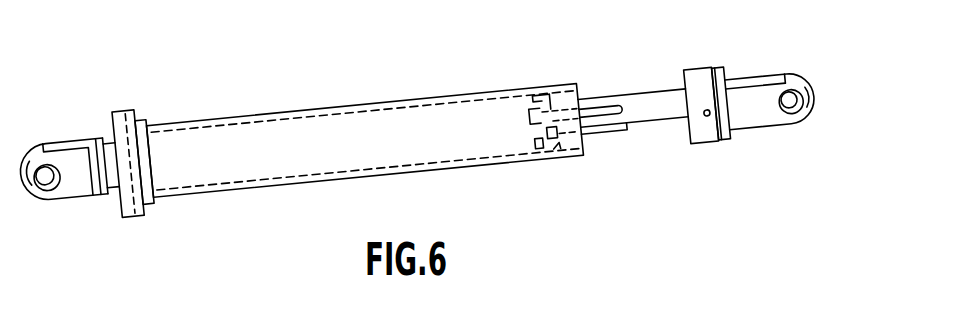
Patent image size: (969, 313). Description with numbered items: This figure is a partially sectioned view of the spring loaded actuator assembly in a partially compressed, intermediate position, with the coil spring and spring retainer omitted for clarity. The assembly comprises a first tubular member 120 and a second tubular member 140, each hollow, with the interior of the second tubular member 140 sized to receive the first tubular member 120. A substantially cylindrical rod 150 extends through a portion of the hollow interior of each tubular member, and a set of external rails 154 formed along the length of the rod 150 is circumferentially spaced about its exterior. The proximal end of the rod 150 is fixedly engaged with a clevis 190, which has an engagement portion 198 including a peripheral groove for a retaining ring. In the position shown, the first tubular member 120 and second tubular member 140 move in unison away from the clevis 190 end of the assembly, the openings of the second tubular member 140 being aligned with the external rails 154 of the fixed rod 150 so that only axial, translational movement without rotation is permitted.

The first tubular member 120 is at (116, 190).
The second tubular member 140 is at (563, 185).
The cylindrical rod 150 is at (645, 136).
The external rails 154 is at (603, 110).
The engagement portion 198 is at (700, 70).
The clevis 190 is at (763, 117).